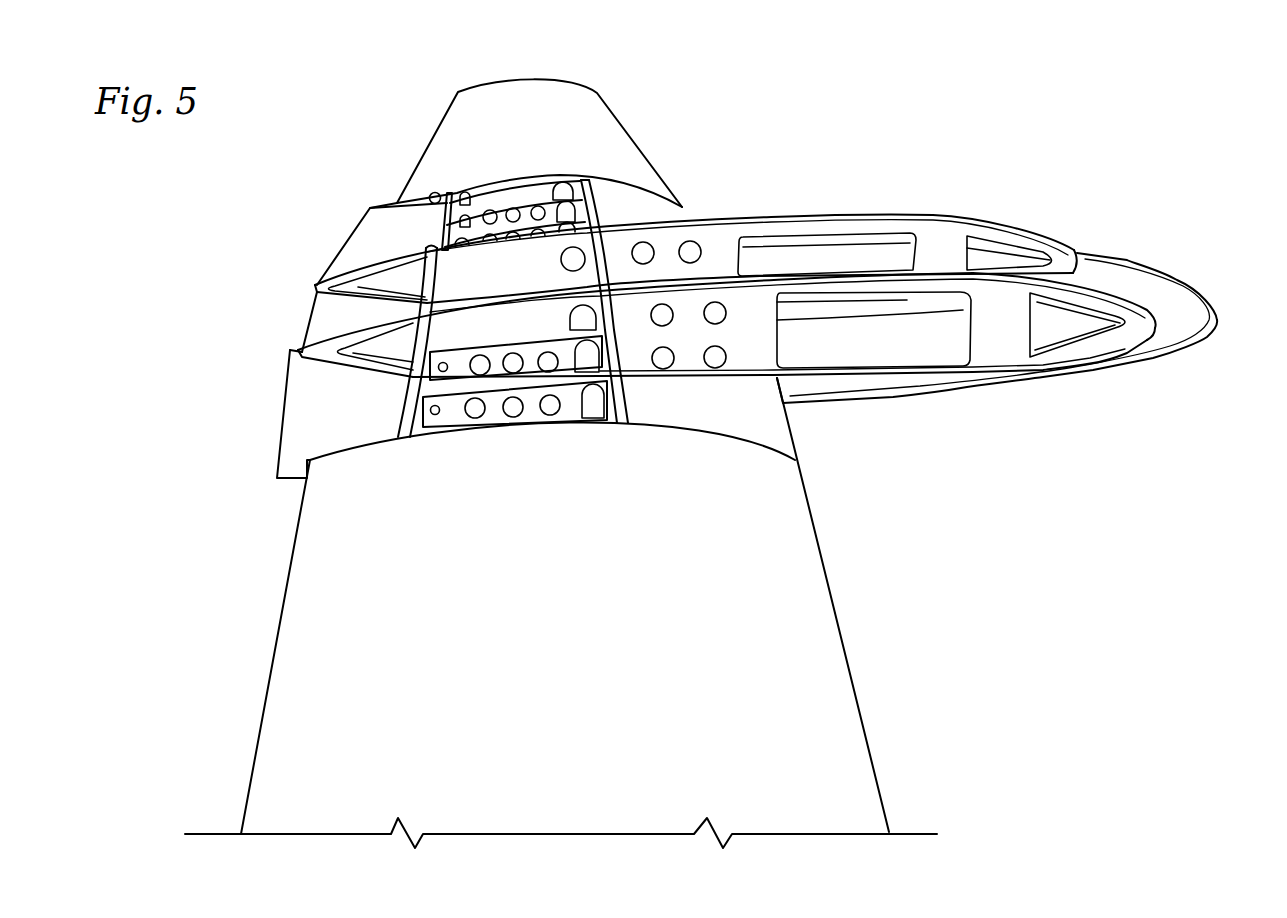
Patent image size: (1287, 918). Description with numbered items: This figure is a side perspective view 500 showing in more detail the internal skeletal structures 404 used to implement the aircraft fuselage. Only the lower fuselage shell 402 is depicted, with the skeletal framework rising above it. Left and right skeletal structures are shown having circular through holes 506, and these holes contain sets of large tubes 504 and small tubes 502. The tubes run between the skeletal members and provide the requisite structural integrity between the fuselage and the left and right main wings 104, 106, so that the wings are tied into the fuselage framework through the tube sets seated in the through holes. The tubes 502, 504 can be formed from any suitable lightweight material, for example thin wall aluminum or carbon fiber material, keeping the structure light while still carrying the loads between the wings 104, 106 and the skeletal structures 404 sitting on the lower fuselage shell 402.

The left main wing 104 is at (455, 125).
The right main wing 106 is at (319, 541).
The lower fuselage shell 402 is at (1113, 273).
The internal skeletal structures 404 is at (978, 215).
The side perspective view 500 is at (912, 155).
The small tubes 502 is at (462, 197).
The large tubes 504 is at (585, 178).
The circular through holes 506 is at (507, 350).